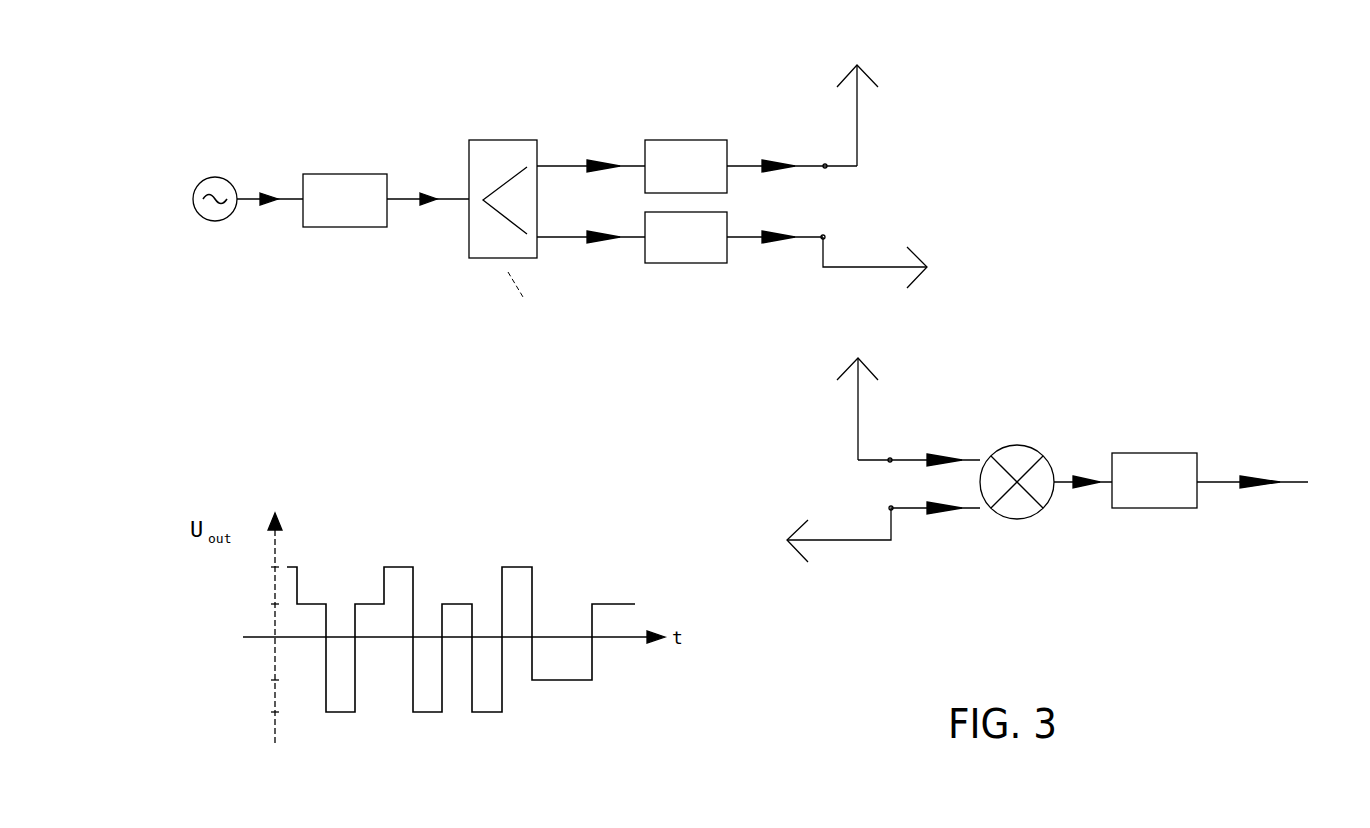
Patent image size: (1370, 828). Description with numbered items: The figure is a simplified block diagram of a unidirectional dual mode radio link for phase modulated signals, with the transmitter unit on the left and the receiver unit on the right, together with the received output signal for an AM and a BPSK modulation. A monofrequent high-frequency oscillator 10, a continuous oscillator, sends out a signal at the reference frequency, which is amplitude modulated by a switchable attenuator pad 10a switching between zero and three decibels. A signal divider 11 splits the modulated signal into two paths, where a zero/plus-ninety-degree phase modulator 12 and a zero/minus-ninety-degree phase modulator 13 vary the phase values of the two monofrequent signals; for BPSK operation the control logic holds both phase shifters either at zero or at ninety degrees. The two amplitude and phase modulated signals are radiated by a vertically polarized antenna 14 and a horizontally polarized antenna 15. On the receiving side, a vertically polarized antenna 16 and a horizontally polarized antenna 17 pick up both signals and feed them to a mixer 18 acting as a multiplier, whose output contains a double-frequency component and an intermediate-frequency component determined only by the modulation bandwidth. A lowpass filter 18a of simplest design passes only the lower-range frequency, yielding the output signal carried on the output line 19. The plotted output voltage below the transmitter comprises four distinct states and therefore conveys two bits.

The high-frequency oscillator 10 is at (197, 167).
The switchable attenuator pad 10a is at (345, 218).
The signal divider 11 is at (492, 147).
The 0°/90° phase modulator 12 is at (668, 147).
The 0°/−90° phase modulator 13 is at (687, 256).
The vertically polarized antenna 14 is at (835, 70).
The horizontally polarized antenna 15 is at (852, 278).
The vertically polarized antenna 16 is at (882, 368).
The horizontally polarized antenna 17 is at (832, 550).
The mixer 18 is at (1022, 513).
The lowpass filter 18a is at (1155, 500).
The output signal line U out 19 is at (1278, 488).